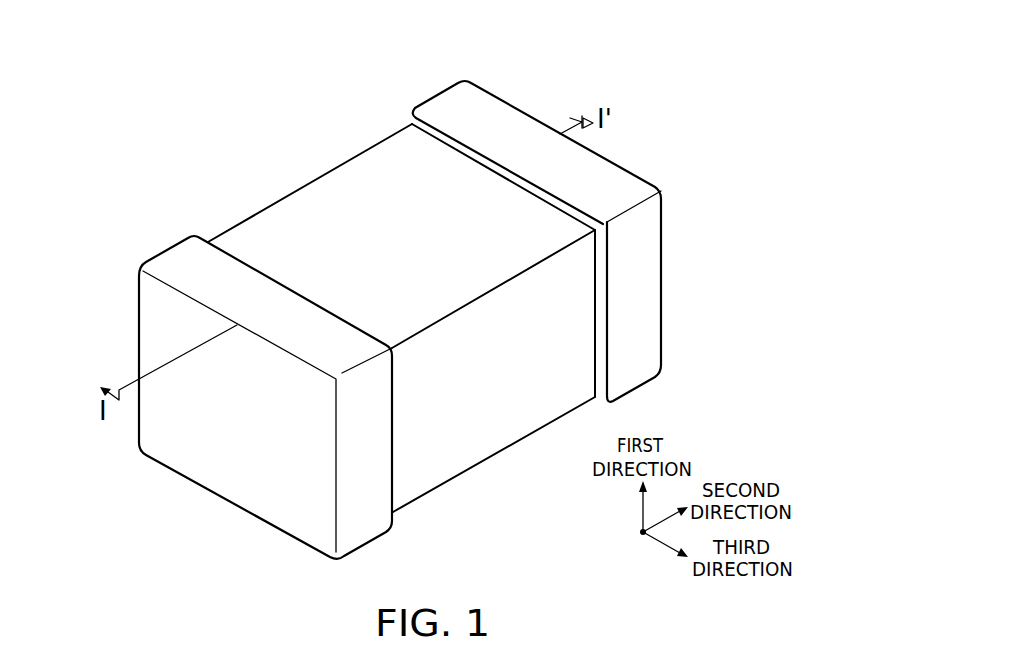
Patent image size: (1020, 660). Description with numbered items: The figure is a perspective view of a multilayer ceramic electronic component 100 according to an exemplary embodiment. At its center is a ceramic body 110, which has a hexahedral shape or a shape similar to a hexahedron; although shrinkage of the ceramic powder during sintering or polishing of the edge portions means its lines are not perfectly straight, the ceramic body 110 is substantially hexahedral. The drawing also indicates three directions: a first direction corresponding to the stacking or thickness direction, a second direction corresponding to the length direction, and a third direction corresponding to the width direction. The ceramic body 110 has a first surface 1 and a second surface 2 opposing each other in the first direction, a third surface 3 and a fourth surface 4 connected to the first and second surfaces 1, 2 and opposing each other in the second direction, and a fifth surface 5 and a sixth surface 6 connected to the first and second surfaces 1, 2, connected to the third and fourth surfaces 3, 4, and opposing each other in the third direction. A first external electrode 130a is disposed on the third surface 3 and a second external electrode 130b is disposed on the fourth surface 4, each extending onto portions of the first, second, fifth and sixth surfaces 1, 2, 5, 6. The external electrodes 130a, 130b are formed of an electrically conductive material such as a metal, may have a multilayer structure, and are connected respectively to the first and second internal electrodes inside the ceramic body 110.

The multilayer ceramic electronic component 100 is at (240, 32).
The ceramic body 110 is at (401, 326).
The first external electrode 130a is at (259, 373).
The second external electrode 130b is at (530, 208).
The first surface 1 is at (443, 492).
The second surface 2 is at (386, 152).
The third surface 3 is at (210, 466).
The fourth surface 4 is at (520, 101).
The fifth surface 5 is at (518, 414).
The sixth surface 6 is at (251, 208).